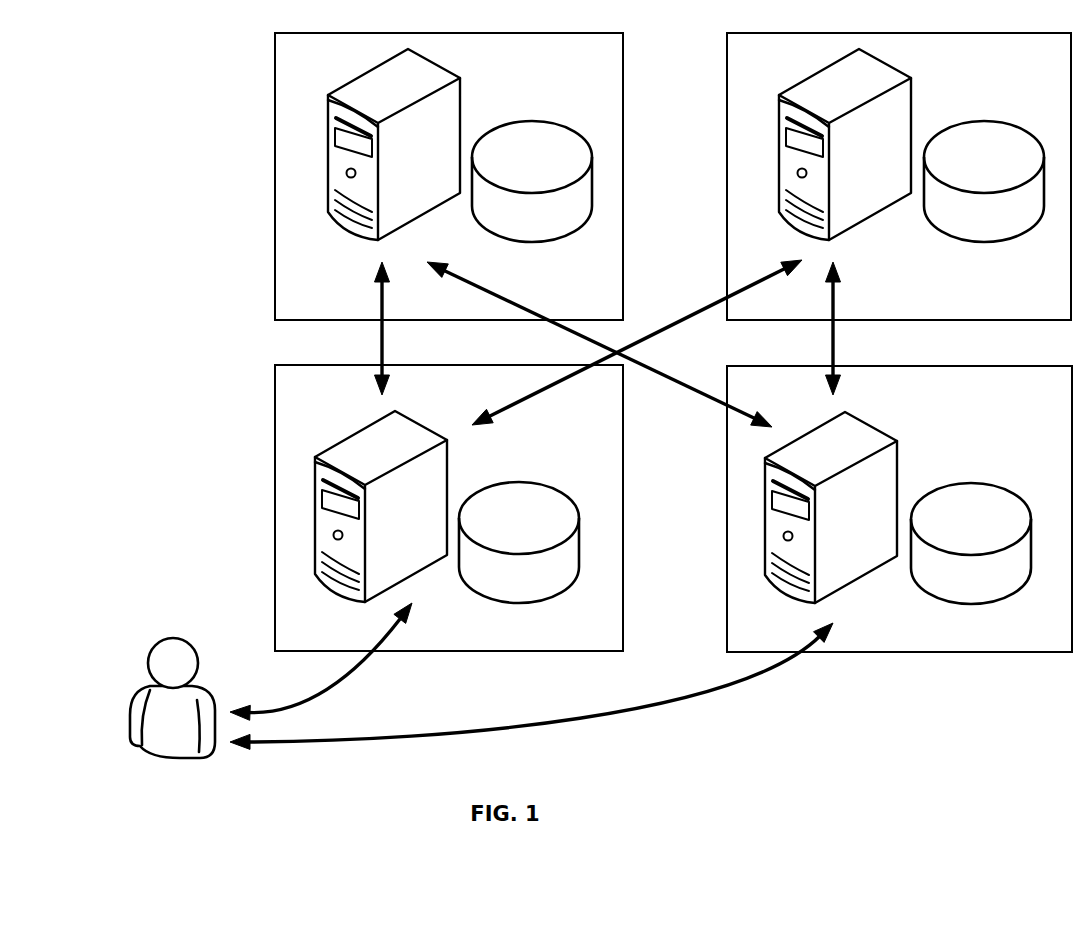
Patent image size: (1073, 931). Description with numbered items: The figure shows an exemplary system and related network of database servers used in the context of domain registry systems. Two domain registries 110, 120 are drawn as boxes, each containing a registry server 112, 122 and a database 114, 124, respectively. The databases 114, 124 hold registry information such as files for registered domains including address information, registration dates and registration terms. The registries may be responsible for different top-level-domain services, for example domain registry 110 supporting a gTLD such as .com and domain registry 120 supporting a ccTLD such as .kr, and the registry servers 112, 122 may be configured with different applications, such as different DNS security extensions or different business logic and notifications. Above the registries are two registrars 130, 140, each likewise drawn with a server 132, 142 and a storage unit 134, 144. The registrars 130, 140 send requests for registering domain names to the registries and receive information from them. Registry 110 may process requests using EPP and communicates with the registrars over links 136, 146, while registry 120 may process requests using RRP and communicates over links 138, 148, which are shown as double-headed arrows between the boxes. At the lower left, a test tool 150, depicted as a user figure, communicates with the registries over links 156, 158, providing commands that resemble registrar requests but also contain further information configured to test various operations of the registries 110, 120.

The domain registry 110 is at (449, 508).
The registry server 112 is at (381, 506).
The database 114 is at (519, 542).
The domain registry 120 is at (899, 509).
The registry server 122 is at (831, 507).
The database 124 is at (971, 543).
The registrar 130 is at (449, 176).
The third server 132 is at (394, 144).
The third database 134 is at (532, 181).
The registrar 140 is at (899, 176).
The fourth server 142 is at (845, 144).
The fourth database 144 is at (984, 181).
The link 136 is at (353, 328).
The link 138 is at (599, 344).
The link 146 is at (637, 342).
The link 148 is at (861, 328).
The test tool 150 is at (156, 698).
The link 156 is at (321, 661).
The link 158 is at (531, 688).